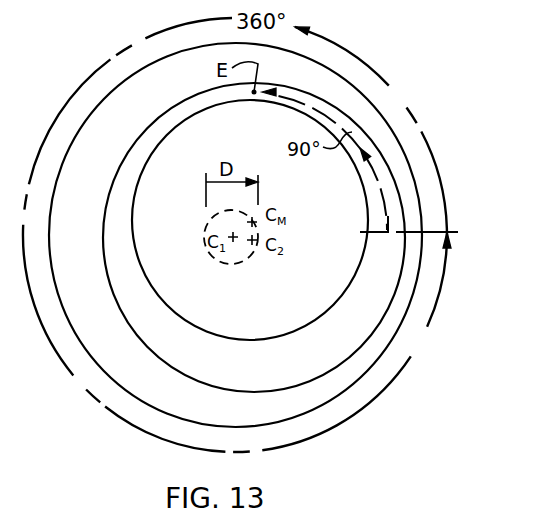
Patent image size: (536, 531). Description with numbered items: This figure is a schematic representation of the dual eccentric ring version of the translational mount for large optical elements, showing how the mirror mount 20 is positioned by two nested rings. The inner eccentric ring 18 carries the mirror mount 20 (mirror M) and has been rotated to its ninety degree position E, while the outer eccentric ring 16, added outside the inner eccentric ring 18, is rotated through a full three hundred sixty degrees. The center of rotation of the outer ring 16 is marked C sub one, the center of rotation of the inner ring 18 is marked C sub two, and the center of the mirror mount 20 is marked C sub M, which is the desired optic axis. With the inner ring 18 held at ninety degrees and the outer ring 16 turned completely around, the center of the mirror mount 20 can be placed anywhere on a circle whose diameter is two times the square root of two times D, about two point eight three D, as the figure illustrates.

The first eccentric ring 16 is at (88, 255).
The second eccentric ring 18 is at (133, 163).
The mirror mount 20 is at (188, 138).